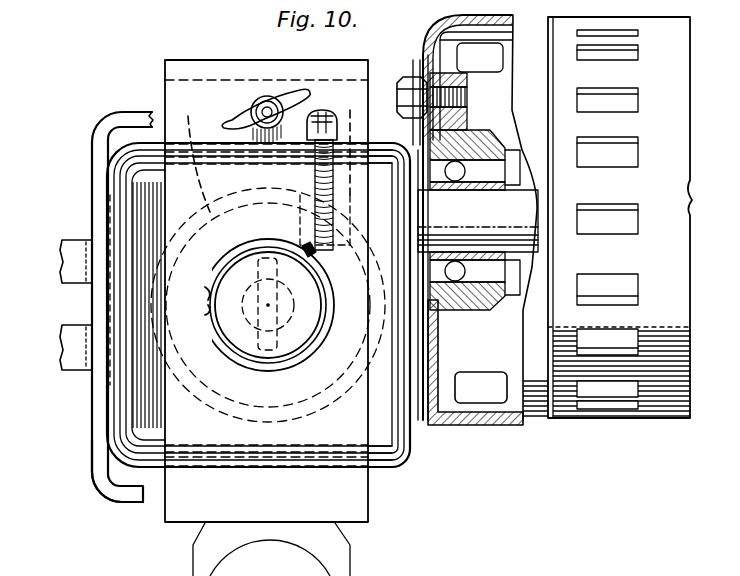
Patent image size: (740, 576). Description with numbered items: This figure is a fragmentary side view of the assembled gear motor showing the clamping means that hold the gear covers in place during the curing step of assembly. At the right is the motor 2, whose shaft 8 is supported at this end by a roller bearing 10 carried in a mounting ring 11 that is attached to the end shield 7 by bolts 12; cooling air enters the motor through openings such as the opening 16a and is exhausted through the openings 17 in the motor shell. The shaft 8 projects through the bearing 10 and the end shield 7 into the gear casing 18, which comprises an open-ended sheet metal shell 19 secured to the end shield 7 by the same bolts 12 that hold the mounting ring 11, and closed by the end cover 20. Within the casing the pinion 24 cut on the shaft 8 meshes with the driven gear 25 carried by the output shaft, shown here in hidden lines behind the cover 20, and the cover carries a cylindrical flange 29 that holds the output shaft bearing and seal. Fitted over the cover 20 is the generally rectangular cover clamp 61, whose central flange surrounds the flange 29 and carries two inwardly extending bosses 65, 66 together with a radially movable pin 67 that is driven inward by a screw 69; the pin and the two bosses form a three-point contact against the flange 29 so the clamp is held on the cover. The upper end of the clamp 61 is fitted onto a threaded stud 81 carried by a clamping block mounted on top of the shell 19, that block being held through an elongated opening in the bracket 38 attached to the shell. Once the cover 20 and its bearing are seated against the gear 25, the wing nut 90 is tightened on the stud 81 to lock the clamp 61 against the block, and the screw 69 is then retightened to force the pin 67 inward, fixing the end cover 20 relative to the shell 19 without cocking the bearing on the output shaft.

The motor 2 is at (650, 418).
The end shield 7 is at (497, 427).
The shaft 8 is at (538, 203).
The roller bearing 10 is at (488, 155).
The mounting ring 11 is at (265, 32).
The bolts 12 is at (427, 73).
The opening 16a is at (483, 72).
The openings 17 is at (634, 276).
The gear casing 18 is at (112, 170).
The shell 19 is at (412, 462).
The end cover 20 is at (140, 396).
The pinion 24 is at (334, 166).
The driven gear 25 is at (194, 156).
The cylindrical flange 29 is at (320, 328).
The bracket 38 is at (97, 466).
The cover clamp 61 is at (165, 508).
The boss 65 is at (206, 305).
The boss 66 is at (312, 350).
The pin 67 is at (306, 248).
The screw 69 is at (315, 178).
The threaded stud 81 is at (262, 110).
The wing nut 90 is at (296, 97).